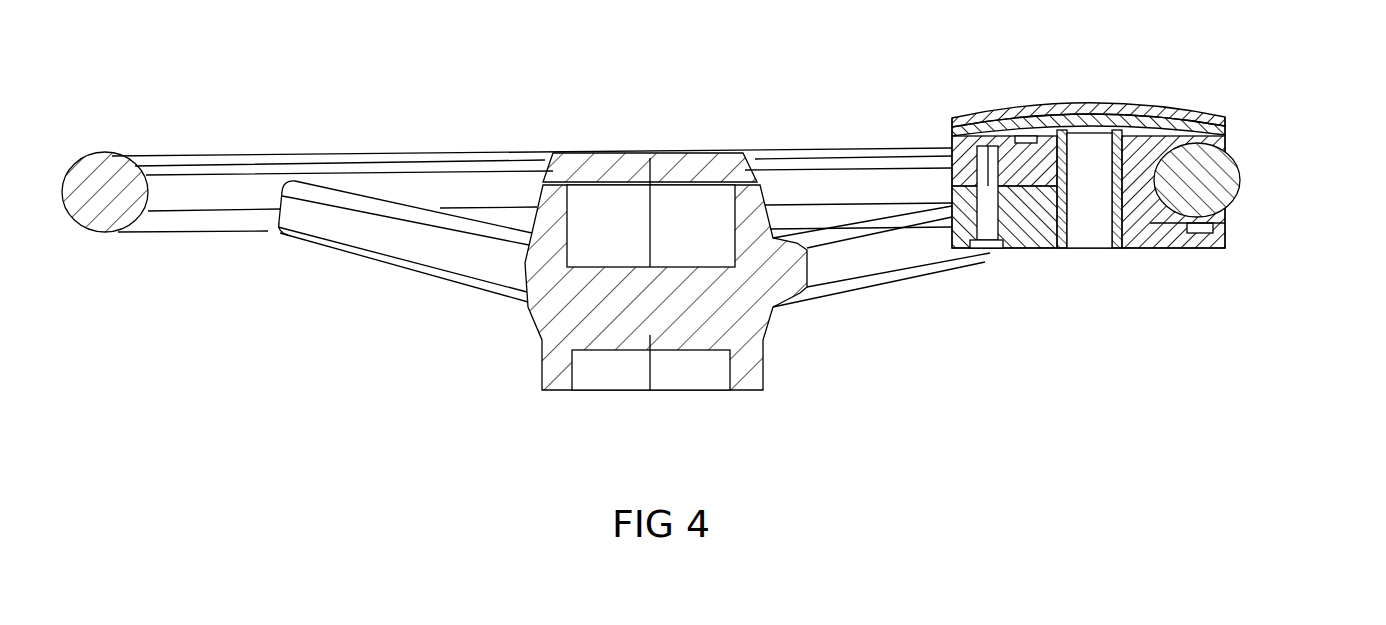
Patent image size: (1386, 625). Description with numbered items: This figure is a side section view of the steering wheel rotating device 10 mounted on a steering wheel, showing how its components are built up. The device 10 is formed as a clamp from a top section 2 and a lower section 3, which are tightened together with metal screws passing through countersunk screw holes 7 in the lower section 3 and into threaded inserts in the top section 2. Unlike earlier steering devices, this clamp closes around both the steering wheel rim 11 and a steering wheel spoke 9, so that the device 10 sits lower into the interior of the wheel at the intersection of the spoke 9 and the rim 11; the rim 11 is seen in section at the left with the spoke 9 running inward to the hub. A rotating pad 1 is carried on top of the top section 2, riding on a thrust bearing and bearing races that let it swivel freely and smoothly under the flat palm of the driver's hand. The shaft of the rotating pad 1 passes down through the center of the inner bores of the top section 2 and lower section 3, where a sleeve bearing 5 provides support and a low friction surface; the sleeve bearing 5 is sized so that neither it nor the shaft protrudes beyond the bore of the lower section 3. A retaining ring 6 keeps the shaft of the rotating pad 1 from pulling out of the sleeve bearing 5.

The rotating pad 1 is at (1098, 107).
The top section 2 is at (975, 113).
The lower section 3 is at (963, 235).
The sleeve bearing 5 is at (1222, 195).
The retaining ring 6 is at (1168, 247).
The countersunk screw holes 7 is at (992, 248).
The steering wheel spoke 9 is at (440, 258).
The steering wheel rotating device 10 is at (1125, 325).
The steering wheel rim 11 is at (157, 167).